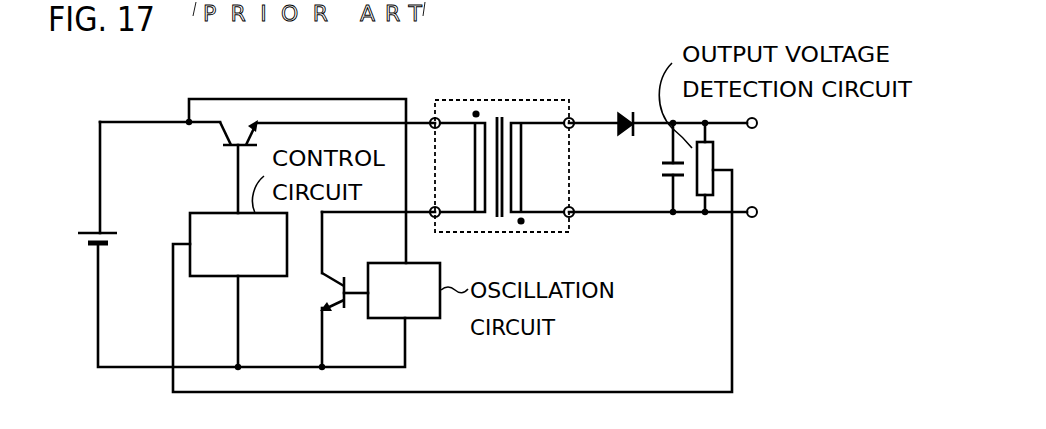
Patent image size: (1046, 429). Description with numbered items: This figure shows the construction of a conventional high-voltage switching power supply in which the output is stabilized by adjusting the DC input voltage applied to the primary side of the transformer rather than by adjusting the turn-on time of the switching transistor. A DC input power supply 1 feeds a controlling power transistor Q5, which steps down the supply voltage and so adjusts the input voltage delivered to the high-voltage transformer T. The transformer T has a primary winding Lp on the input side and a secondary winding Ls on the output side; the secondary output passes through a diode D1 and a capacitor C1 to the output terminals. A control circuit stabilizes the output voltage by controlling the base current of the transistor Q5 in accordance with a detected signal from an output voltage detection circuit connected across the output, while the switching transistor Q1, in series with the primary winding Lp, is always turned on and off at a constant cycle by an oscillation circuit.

The DC input power supply 1 is at (78, 236).
The controlling power transistor Q5 is at (240, 124).
The switching transistor Q1 is at (323, 293).
The high-voltage transformer T is at (589, 76).
The primary winding Lp is at (462, 161).
The secondary winding Ls is at (537, 174).
The rectifier diode D1 is at (631, 115).
The smoothing capacitor C1 is at (661, 171).